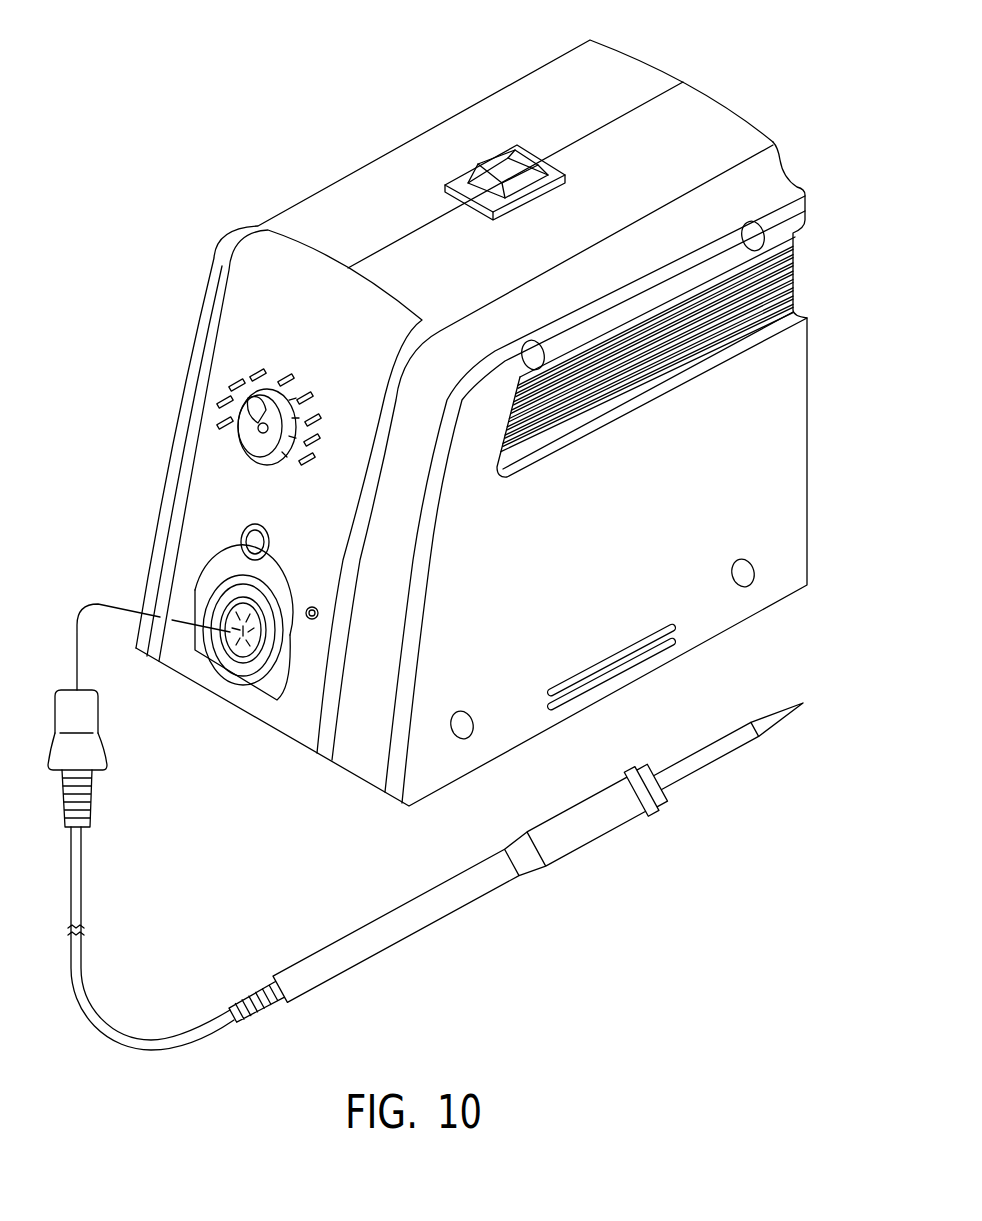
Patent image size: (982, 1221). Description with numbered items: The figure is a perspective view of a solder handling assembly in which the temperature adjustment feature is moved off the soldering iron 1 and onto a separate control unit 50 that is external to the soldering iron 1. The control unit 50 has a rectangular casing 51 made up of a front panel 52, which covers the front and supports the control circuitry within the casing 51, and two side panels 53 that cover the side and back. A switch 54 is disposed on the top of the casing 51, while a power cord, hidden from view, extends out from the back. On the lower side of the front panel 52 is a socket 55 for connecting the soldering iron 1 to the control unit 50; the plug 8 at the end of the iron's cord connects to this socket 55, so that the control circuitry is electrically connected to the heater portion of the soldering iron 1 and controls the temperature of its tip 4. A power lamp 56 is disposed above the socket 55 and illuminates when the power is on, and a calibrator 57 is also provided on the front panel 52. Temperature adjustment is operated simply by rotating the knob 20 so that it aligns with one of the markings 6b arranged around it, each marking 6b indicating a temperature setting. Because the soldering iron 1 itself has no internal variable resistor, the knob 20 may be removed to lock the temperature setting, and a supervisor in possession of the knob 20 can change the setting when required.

The control unit 50 is at (271, 126).
The rectangular casing 51 is at (471, 423).
The front panel 52 is at (253, 277).
The side panels 53 is at (537, 97).
The switch 54 is at (505, 170).
The knob 20 is at (240, 375).
The markings 6b is at (220, 423).
The power lamp 56 is at (240, 540).
The calibrator 57 is at (312, 607).
The socket 55 is at (230, 627).
The plug 8 is at (98, 717).
The soldering iron 1 is at (468, 908).
The tip 4 is at (765, 733).